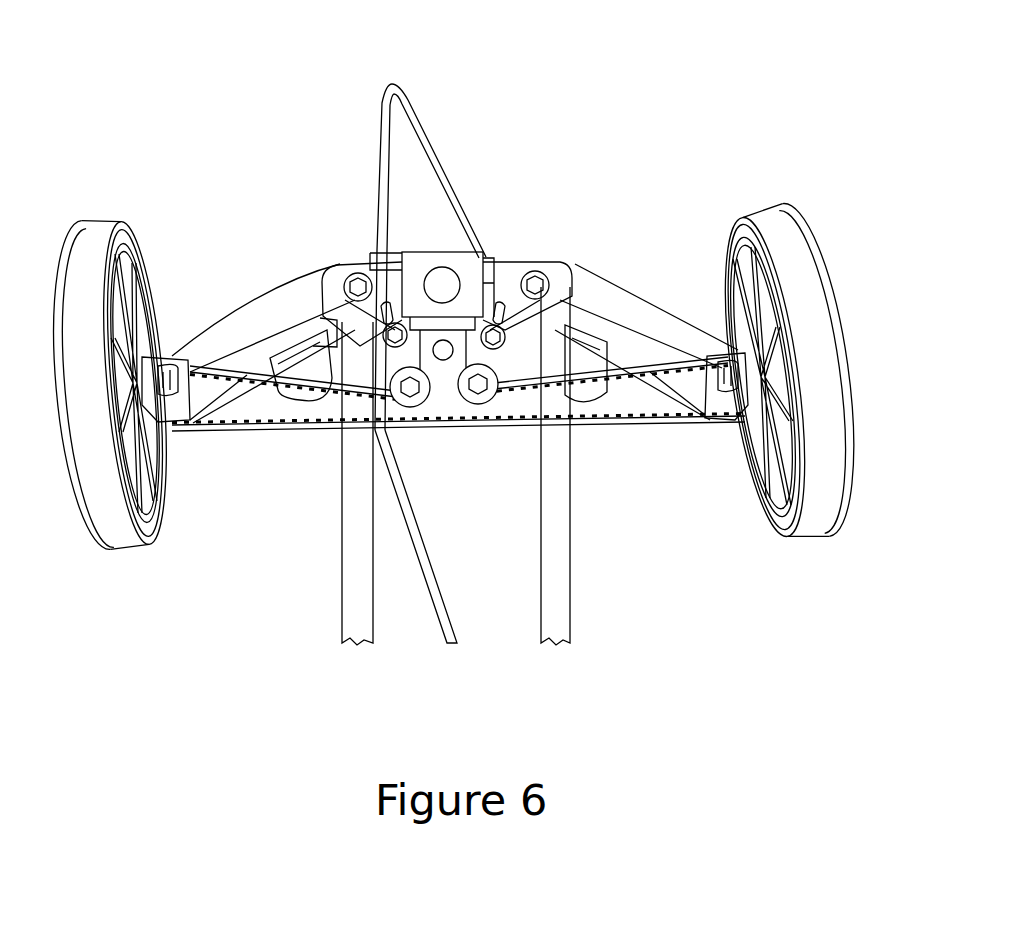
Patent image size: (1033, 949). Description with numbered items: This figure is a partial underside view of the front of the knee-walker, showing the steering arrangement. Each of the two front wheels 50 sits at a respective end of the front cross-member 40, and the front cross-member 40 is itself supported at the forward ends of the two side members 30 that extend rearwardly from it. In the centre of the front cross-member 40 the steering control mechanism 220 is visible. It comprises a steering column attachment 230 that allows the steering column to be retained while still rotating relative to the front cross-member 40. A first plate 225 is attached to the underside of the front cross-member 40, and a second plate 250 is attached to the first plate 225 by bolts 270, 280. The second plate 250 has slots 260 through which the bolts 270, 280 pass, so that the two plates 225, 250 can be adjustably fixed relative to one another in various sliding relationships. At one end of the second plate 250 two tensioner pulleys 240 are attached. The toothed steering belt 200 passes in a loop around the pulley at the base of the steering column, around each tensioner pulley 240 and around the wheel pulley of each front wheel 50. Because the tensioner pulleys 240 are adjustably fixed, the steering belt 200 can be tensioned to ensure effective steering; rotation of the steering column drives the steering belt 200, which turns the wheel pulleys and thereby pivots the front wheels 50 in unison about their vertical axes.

The side member 30 is at (352, 573).
The front cross-member 40 is at (214, 345).
The front wheel 50 is at (110, 525).
The steering belt 200 is at (240, 432).
The steering control mechanism 220 is at (596, 83).
The first plate 225 is at (333, 285).
The steering column attachment 230 is at (440, 280).
The tensioner pulley 240 is at (413, 394).
The second plate 250 is at (526, 292).
The slot 260 is at (500, 313).
The bolt 270 is at (388, 347).
The bolt 280 is at (325, 405).